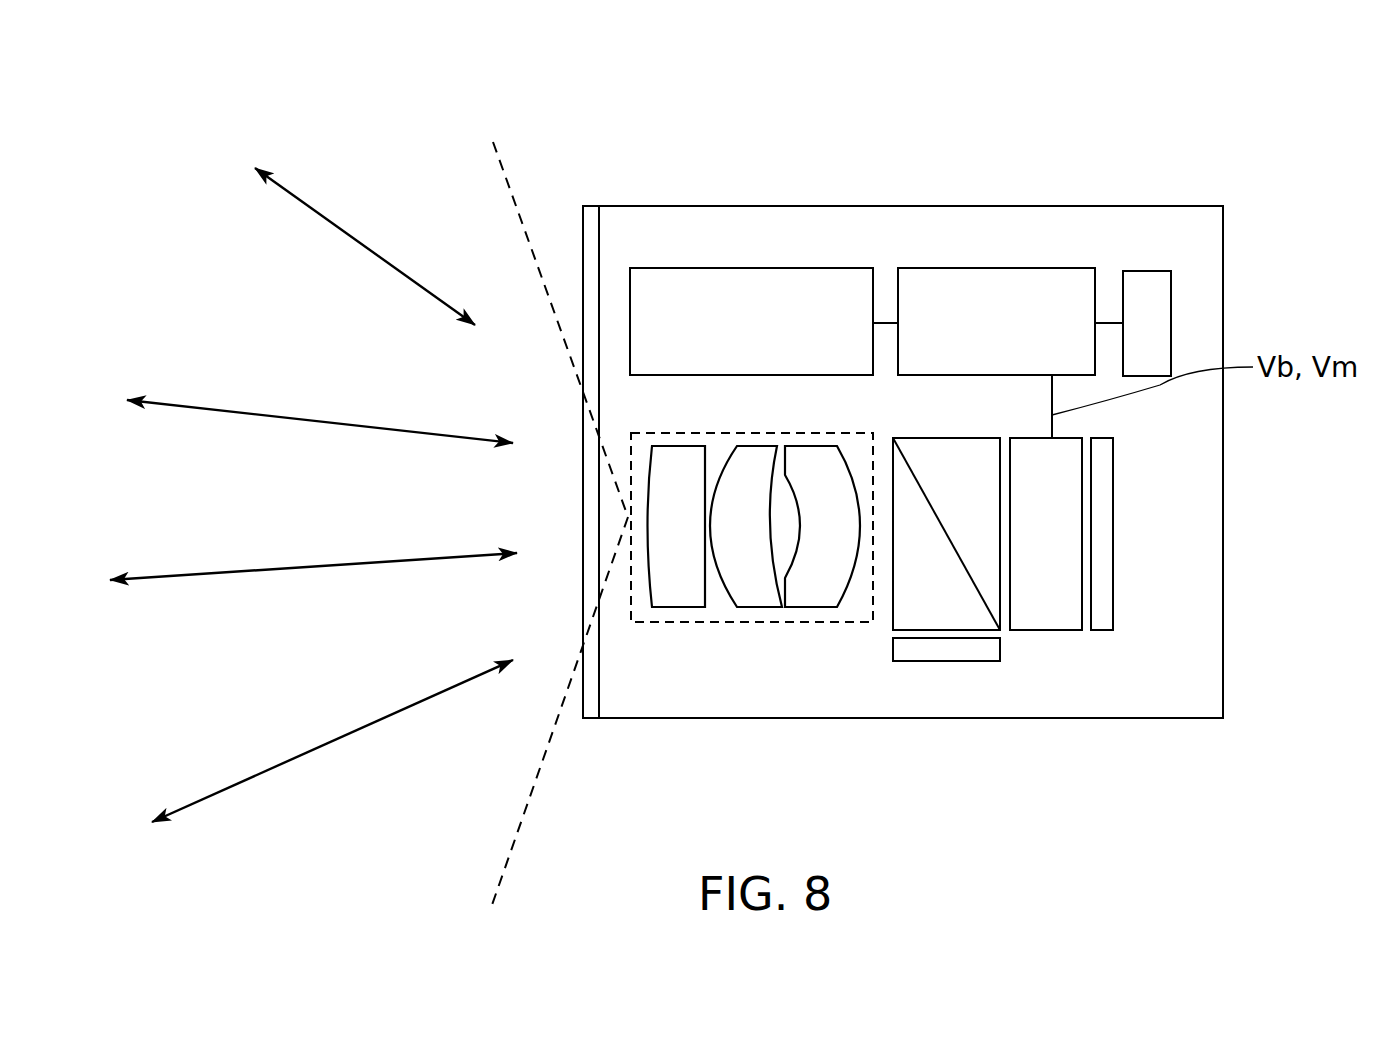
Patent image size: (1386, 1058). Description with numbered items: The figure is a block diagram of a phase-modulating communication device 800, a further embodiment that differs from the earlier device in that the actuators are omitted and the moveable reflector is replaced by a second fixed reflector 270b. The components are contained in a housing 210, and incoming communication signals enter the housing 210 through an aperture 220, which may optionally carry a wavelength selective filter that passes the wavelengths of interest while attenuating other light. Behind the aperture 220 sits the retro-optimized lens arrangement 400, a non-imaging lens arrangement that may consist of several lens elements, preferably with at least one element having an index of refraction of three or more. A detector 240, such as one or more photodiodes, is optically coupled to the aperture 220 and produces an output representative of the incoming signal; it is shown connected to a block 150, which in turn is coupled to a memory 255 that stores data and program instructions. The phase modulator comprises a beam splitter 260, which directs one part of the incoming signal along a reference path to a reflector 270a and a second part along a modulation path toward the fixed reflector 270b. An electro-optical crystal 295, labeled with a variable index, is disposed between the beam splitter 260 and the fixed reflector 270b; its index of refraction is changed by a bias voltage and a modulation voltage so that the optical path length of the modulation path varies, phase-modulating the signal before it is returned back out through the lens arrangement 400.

The phase-modulating communication device 800 is at (1257, 79).
The housing 210 is at (1173, 206).
The aperture 220 is at (592, 703).
The detector 240 is at (795, 268).
The driver circuit 150 is at (1037, 268).
The memory 255 is at (1171, 334).
The beam splitter 260 is at (937, 438).
The electro-optical crystal 295 is at (1073, 438).
The first sensor 270a is at (935, 661).
The second fixed reflector 270b is at (1113, 548).
The retro-optimized lens arrangement 400 is at (742, 622).